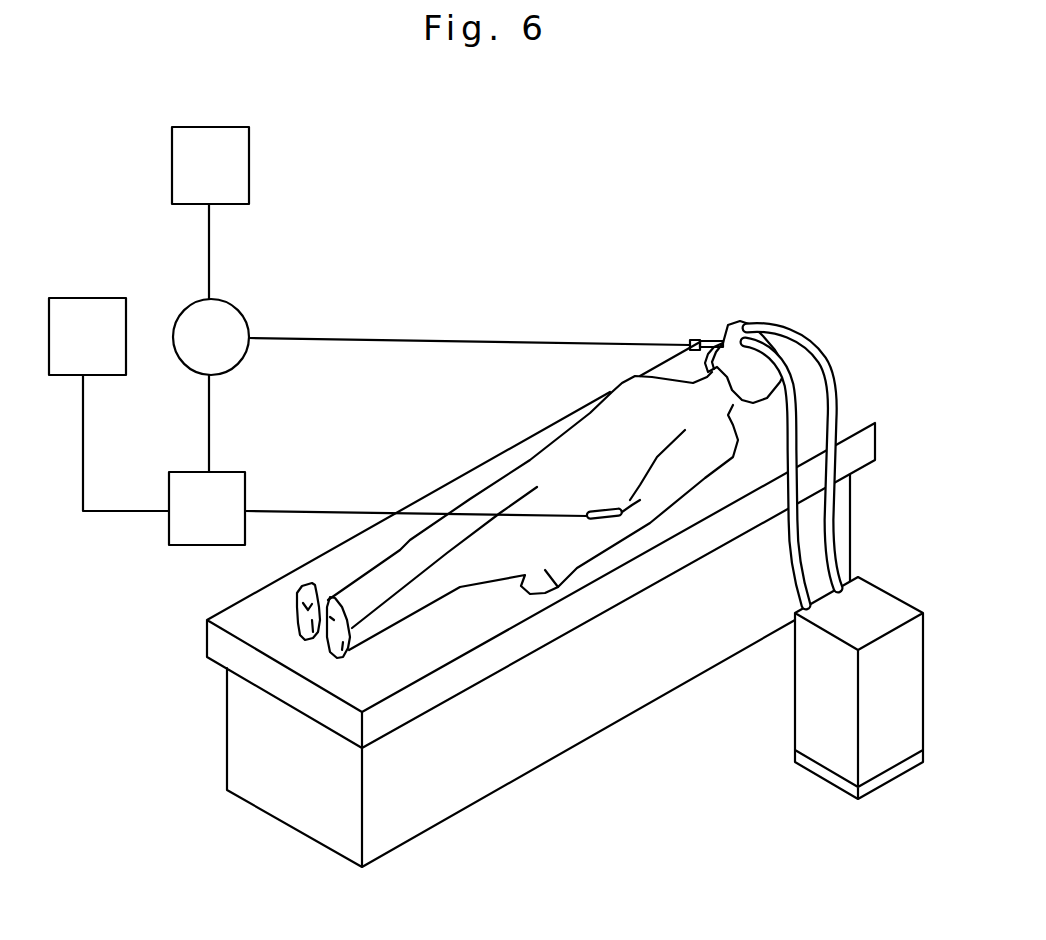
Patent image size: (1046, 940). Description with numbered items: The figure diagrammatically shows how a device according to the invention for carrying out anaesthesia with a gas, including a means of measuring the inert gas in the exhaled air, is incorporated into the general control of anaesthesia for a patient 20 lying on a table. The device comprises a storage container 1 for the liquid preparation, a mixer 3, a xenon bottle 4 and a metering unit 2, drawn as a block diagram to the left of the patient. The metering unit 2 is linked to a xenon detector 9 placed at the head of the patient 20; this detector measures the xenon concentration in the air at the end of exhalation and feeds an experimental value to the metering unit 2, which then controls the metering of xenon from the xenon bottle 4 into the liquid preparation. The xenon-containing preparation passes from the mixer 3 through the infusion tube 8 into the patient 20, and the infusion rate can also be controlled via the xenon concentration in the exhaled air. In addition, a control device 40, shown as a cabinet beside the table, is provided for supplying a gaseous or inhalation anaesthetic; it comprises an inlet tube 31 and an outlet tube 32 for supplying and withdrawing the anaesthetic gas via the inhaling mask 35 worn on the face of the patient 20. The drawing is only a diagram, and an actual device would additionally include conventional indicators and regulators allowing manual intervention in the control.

The storage container 1 is at (87, 336).
The metering unit 2 is at (211, 337).
The mixer 3 is at (207, 508).
The xenon bottle 4 is at (210, 165).
The infusion tube 8 is at (433, 496).
The xenon detector 9 is at (486, 333).
The patient 20 is at (541, 489).
The inlet tube 31 is at (775, 473).
The outlet tube 32 is at (803, 457).
The inhaling mask 35 is at (733, 362).
The control device 40 is at (859, 688).